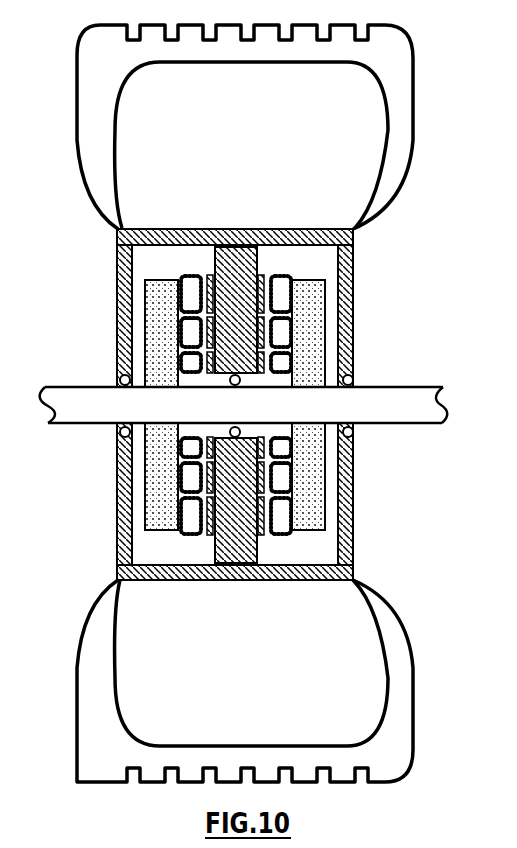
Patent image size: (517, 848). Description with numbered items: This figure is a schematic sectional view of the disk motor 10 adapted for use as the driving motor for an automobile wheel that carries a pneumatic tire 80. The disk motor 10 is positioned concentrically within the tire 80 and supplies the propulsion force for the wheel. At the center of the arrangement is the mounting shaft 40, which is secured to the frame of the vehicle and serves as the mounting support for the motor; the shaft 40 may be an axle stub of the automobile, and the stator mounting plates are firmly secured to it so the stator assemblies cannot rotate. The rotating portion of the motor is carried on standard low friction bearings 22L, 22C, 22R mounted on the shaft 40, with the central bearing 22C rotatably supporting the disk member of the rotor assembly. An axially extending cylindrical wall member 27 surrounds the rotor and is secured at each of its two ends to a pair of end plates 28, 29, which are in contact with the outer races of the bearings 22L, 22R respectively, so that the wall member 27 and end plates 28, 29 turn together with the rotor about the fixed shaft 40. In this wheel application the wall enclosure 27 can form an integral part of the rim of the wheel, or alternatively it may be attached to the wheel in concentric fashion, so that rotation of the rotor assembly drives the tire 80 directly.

The disk motor 10 is at (269, 376).
The bearing 22L is at (120, 377).
The bearing 22C is at (241, 382).
The bearing 22R is at (353, 378).
The cylindrical wall member 27 is at (318, 229).
The end plate 28 is at (118, 263).
The end plate 29 is at (355, 272).
The mounting shaft 40 is at (403, 407).
The pneumatic tire 80 is at (397, 83).